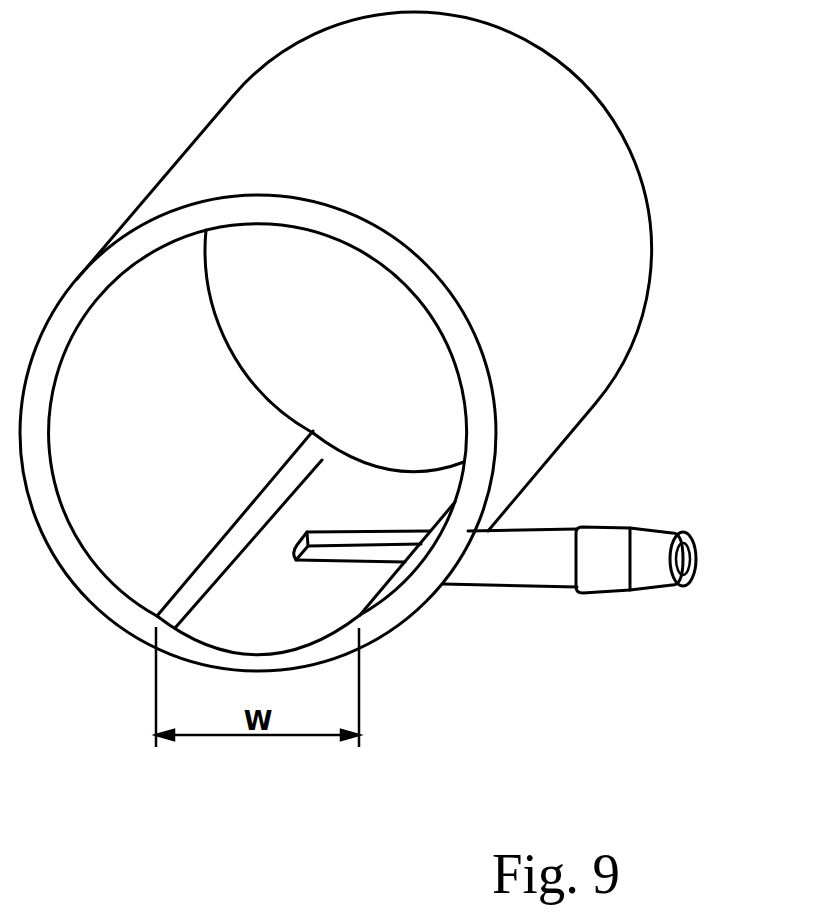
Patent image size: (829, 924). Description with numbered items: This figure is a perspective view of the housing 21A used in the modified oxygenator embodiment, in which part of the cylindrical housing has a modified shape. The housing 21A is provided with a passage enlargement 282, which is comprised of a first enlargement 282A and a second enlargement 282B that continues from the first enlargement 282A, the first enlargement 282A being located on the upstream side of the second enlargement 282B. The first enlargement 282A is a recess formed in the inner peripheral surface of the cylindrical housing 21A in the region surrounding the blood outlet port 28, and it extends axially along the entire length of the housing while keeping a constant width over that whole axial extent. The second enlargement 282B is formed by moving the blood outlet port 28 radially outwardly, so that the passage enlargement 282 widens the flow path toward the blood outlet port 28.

The housing 21A is at (602, 195).
The passage enlargement 282 is at (310, 476).
The first enlargement 282A is at (335, 488).
The second enlargement 282B is at (375, 540).
The blood outlet port 28 is at (535, 563).